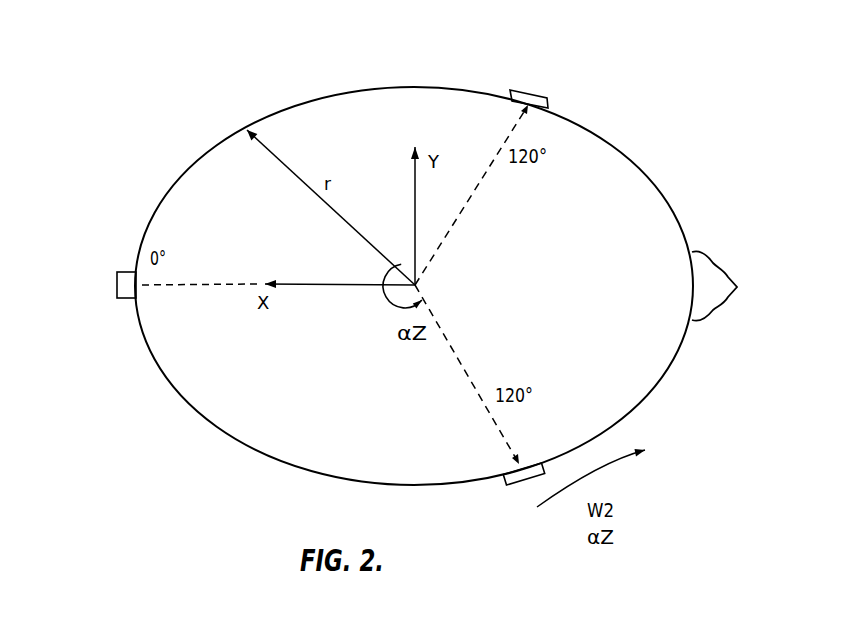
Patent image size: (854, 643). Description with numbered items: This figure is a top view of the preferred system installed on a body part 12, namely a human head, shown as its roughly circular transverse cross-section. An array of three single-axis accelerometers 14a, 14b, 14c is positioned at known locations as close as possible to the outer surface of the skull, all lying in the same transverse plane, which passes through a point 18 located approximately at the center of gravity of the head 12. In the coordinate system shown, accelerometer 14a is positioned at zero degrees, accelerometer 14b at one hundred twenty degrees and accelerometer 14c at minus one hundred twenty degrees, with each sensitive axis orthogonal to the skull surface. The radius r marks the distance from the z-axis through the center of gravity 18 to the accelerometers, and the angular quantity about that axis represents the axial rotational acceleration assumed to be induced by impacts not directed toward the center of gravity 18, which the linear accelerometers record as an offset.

The body part 12 is at (652, 395).
The accelerometer 14a is at (121, 272).
The accelerometer 14b is at (536, 97).
The accelerometer 14c is at (517, 483).
The center of gravity 18 is at (423, 277).